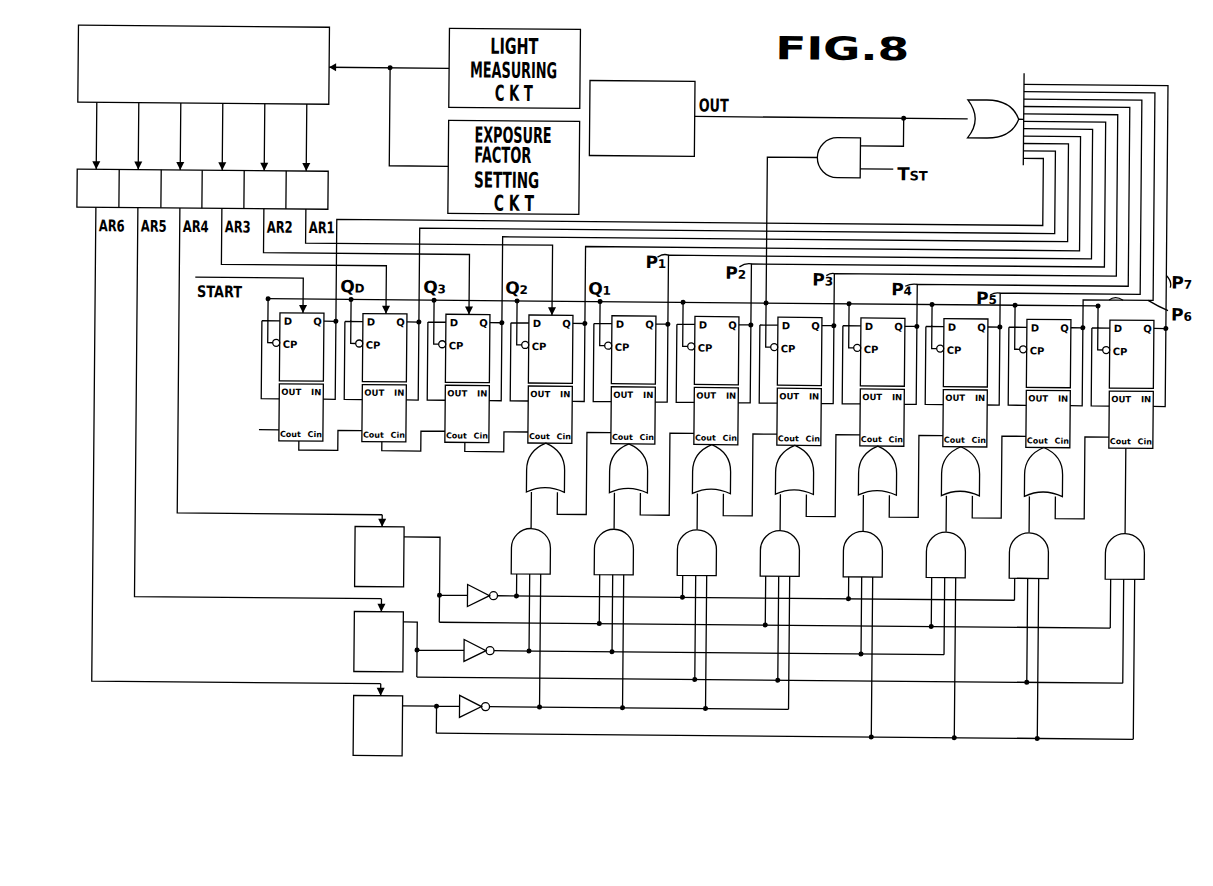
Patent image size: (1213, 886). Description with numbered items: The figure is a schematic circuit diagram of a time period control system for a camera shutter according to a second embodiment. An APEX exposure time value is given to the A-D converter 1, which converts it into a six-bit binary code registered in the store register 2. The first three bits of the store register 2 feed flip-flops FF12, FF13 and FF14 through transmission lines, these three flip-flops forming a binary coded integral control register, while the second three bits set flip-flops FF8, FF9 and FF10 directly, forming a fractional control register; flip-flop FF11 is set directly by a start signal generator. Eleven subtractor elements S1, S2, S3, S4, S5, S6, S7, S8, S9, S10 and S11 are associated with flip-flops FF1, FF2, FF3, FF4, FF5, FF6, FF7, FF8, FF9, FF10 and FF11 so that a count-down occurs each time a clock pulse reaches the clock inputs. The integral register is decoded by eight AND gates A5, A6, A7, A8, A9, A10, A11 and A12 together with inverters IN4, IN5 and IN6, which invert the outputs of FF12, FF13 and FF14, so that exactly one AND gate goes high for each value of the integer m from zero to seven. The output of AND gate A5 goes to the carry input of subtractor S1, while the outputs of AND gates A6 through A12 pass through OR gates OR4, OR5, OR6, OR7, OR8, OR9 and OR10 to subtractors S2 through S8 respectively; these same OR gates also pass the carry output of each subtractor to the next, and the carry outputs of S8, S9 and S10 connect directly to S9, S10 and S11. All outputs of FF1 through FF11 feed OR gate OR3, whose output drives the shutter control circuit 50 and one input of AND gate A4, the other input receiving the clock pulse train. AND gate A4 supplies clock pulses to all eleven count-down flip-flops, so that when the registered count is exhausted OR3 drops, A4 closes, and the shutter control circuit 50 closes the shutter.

The A-D converter 1 is at (327, 38).
The store register 2 is at (327, 190).
The shutter control circuit 50 is at (643, 78).
The flip-flop FF1 is at (1131, 354).
The flip-flop FF2 is at (1048, 353).
The flip-flop FF3 is at (965, 353).
The flip-flop FF4 is at (882, 352).
The flip-flop FF5 is at (799, 351).
The flip-flop FF6 is at (716, 350).
The flip-flop FF7 is at (633, 350).
The flip-flop FF8 is at (550, 349).
The flip-flop FF9 is at (467, 348).
The flip-flop FF10 is at (386, 348).
The flip-flop FF11 is at (303, 347).
The flip-flop FF12 is at (380, 556).
The flip-flop FF13 is at (379, 641).
The flip-flop FF14 is at (378, 725).
The subtractor element S1 is at (1131, 419).
The subtractor element S2 is at (1048, 418).
The subtractor element S3 is at (965, 418).
The subtractor element S4 is at (882, 417).
The subtractor element S5 is at (799, 416).
The subtractor element S6 is at (716, 415).
The subtractor element S7 is at (633, 415).
The subtractor element S8 is at (550, 414).
The subtractor element S9 is at (467, 413).
The subtractor element S10 is at (384, 413).
The subtractor element S11 is at (301, 412).
The OR gate OR3 is at (993, 119).
The OR gate OR4 is at (1043, 471).
The OR gate OR5 is at (960, 471).
The OR gate OR6 is at (877, 470).
The OR gate OR7 is at (794, 469).
The OR gate OR8 is at (711, 468).
The OR gate OR9 is at (628, 468).
The OR gate OR10 is at (548, 467).
The AND gate A4 is at (838, 158).
The AND gate A5 is at (1124, 557).
The AND gate A6 is at (1028, 556).
The AND gate A7 is at (945, 555).
The AND gate A8 is at (862, 554).
The AND gate A9 is at (779, 554).
The AND gate A10 is at (696, 553).
The AND gate A11 is at (613, 552).
The AND gate A12 is at (530, 551).
The inverter IN4 is at (480, 586).
The inverter IN5 is at (467, 646).
The inverter IN6 is at (463, 702).